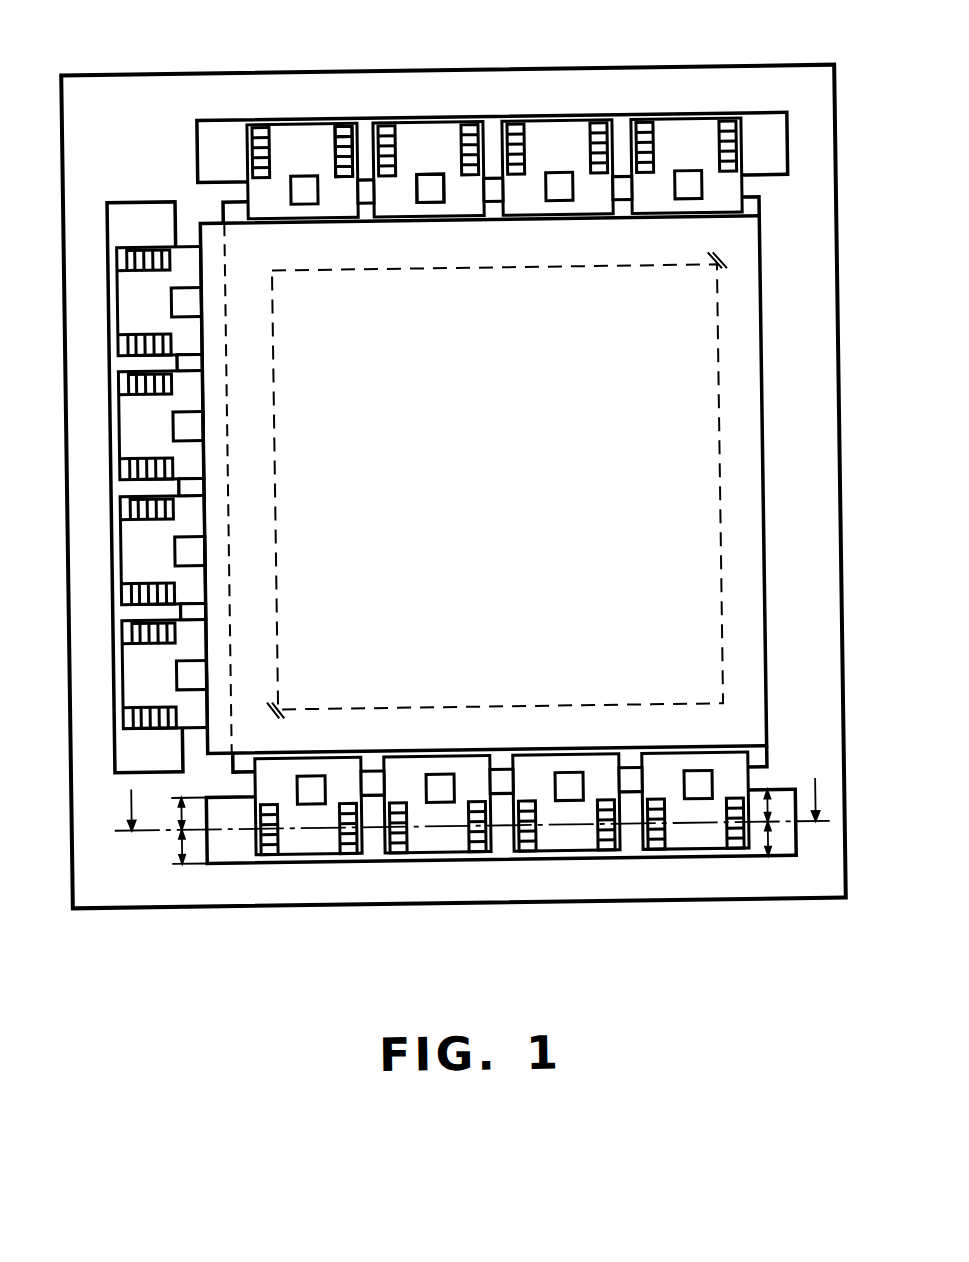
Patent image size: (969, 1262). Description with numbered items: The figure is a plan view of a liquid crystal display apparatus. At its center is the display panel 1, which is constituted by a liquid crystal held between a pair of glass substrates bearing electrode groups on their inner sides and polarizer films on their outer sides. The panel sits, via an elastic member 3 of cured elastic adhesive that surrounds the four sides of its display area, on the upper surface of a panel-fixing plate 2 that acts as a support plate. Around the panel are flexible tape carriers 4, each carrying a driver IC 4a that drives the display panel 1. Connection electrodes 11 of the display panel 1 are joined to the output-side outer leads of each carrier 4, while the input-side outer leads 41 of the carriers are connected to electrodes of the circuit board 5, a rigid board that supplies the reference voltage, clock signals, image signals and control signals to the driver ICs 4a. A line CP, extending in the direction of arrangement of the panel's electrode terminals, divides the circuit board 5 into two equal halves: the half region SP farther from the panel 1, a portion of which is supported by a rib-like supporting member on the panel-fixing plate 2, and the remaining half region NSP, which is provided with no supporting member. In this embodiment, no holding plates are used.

The display panel 1 is at (493, 301).
The panel-fixing plate 2 is at (611, 84).
The elastic member 3 is at (467, 800).
The flexible tape carrier 4 is at (422, 130).
The driver IC 4a is at (437, 187).
The circuit board 5 is at (369, 133).
The connection electrode 11 is at (624, 213).
The input-side outer leads 41 is at (348, 135).
The half region NSP is at (175, 808).
The half region SP is at (176, 847).
The line CP is at (191, 826).